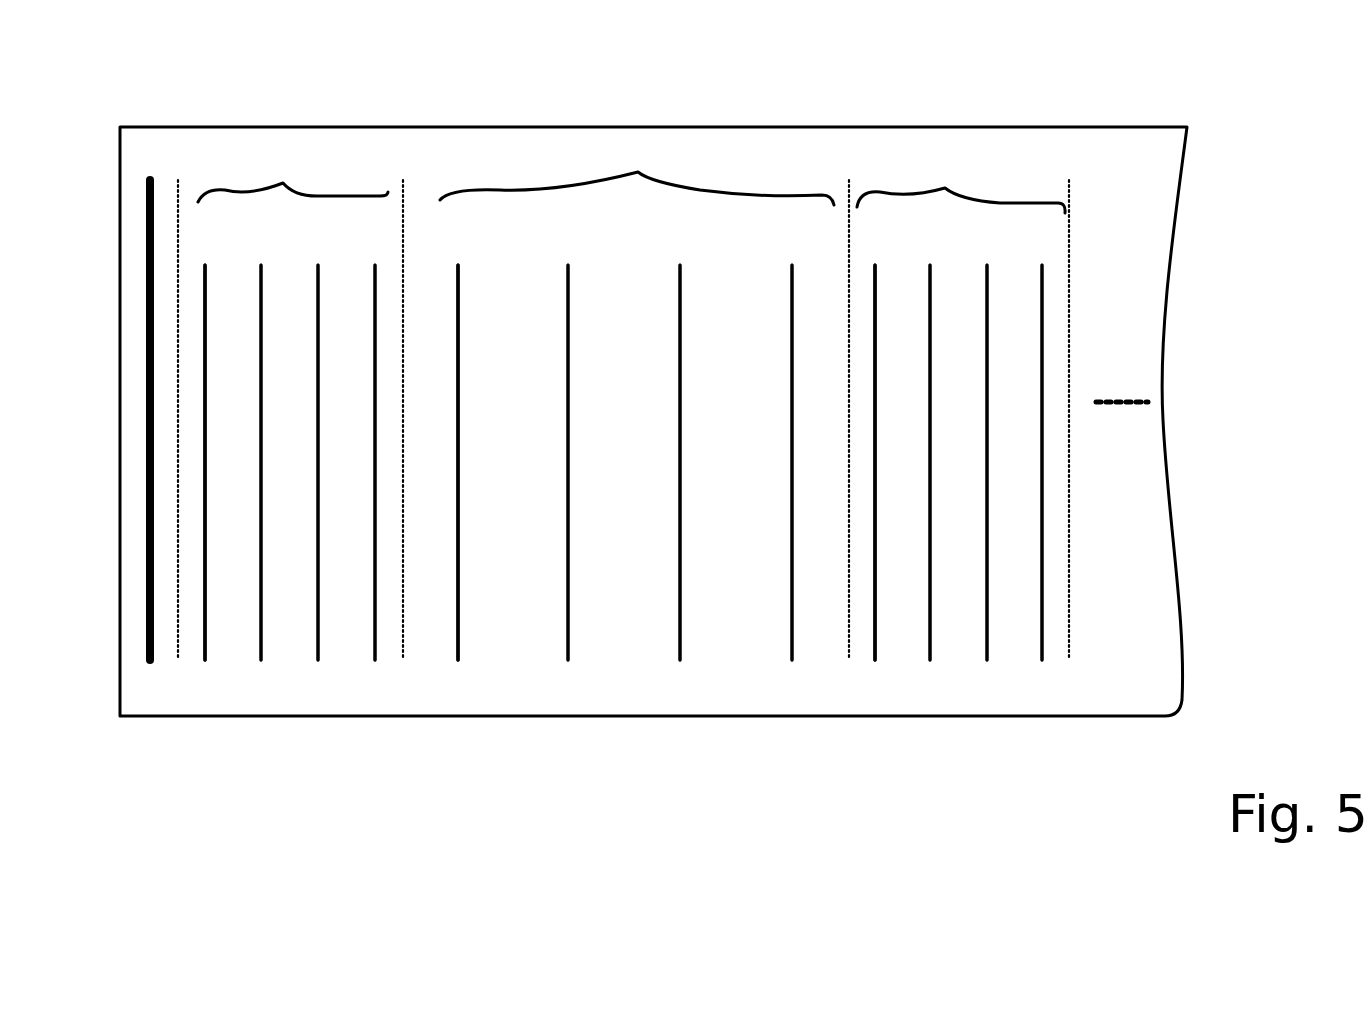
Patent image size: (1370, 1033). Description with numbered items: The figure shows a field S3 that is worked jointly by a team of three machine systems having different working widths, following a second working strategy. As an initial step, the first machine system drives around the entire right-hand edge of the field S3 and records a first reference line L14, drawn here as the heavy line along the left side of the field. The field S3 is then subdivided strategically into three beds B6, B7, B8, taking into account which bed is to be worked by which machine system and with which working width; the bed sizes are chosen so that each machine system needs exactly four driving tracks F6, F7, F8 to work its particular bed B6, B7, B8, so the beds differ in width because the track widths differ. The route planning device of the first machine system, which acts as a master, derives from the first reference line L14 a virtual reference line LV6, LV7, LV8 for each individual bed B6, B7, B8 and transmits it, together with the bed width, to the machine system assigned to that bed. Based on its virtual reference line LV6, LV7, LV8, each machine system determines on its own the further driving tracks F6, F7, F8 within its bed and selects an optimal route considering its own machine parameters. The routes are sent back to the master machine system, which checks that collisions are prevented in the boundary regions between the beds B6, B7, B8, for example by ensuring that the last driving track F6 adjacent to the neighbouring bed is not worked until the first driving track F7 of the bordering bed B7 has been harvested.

The field S3 is at (1143, 127).
The first reference line L14 is at (150, 410).
The bed B6 is at (285, 180).
The bed B7 is at (640, 172).
The bed B8 is at (945, 188).
The driving tracks F6 is at (205, 648).
The driving tracks F7 is at (458, 625).
The driving tracks F8 is at (875, 645).
The virtual reference line LV6 is at (205, 650).
The virtual reference line LV7 is at (458, 625).
The virtual reference line LV8 is at (875, 645).